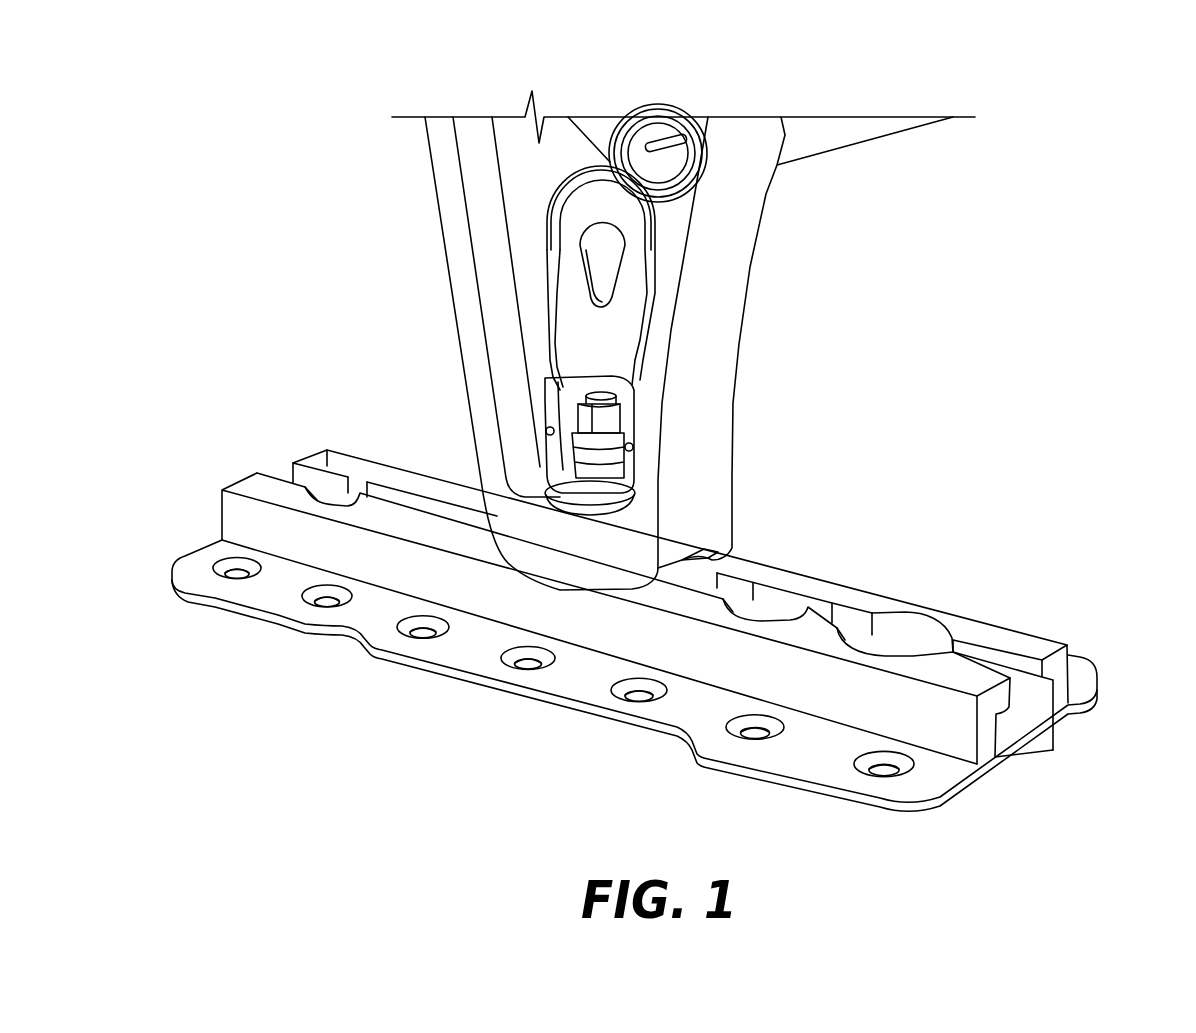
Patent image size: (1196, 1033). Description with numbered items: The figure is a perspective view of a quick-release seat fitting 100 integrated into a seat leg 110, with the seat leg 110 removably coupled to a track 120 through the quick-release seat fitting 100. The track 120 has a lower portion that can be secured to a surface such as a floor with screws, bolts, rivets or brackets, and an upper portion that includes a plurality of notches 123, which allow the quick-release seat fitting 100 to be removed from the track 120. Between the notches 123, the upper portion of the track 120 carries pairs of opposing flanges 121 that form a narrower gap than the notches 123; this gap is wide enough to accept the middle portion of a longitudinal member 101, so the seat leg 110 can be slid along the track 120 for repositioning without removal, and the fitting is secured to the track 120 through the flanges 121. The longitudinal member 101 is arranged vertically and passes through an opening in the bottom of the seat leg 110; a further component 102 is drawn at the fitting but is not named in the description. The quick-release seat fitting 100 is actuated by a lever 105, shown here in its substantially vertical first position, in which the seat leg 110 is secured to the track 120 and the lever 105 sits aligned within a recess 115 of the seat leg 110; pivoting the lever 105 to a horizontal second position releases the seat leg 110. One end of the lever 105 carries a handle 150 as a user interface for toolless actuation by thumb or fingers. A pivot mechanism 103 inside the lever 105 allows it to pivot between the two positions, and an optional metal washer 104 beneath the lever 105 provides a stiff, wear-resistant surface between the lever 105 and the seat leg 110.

The quick-release seat fitting 100 is at (575, 70).
The longitudinal member 101 is at (601, 480).
The bolt head 102 is at (597, 423).
The pivot mechanism 103 is at (583, 457).
The washer 104 is at (564, 498).
The lever 105 is at (573, 338).
The seat leg 110 is at (707, 458).
The recess 115 is at (558, 181).
The track 120 is at (1030, 637).
The flanges 121 is at (853, 600).
The notches 123 is at (909, 626).
The handle 150 is at (562, 222).